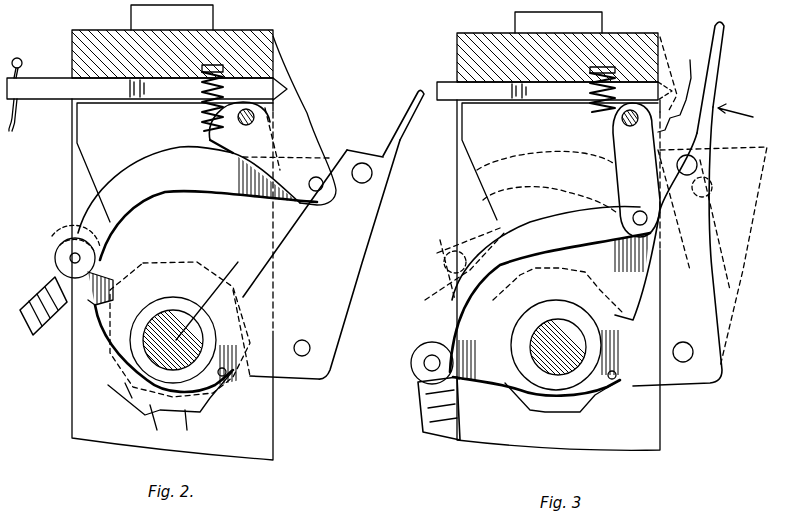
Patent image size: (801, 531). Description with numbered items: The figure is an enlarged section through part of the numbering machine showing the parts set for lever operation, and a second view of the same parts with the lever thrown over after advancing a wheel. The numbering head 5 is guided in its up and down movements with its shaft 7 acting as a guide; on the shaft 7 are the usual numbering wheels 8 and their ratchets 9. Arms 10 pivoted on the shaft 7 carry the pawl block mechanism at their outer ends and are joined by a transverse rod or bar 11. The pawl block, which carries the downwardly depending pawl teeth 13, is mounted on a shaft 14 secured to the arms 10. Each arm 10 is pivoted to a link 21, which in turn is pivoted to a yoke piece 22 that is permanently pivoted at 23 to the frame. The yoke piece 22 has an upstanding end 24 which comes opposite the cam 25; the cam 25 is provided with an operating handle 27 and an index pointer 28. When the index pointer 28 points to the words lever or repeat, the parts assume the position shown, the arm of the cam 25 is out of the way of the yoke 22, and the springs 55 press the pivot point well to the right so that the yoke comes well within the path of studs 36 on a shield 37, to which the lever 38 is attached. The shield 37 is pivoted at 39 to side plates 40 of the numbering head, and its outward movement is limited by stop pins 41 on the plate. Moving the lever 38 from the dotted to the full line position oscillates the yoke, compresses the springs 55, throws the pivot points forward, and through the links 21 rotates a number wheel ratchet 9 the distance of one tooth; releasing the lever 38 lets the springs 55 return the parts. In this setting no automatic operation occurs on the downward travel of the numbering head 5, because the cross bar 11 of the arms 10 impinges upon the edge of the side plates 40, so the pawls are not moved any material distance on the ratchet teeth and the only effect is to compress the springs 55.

In FIG. 2, the numbering head 5 is at (128, 404).
In FIG. 3, the numbering head 5 is at (528, 398).
In FIG. 2, the shaft 7 is at (211, 295).
In FIG. 3, the shaft 7 is at (563, 367).
In FIG. 2, the numbering wheels 8 is at (185, 430).
In FIG. 2, the ratchets 9 is at (155, 428).
In FIG. 2, the arms 10 is at (169, 329).
In FIG. 3, the arms 10 is at (537, 332).
In FIG. 2, the transverse rod or bar 11 is at (86, 223).
In FIG. 2, the pawl teeth 13 is at (67, 327).
In FIG. 3, the pawl teeth 13 is at (433, 433).
In FIG. 2, the shaft 14 is at (70, 258).
In FIG. 3, the shaft 14 is at (424, 364).
In FIG. 2, the link 21 is at (197, 203).
In FIG. 3, the link 21 is at (550, 289).
In FIG. 2, the yoke piece 22 is at (269, 146).
In FIG. 3, the yoke piece 22 is at (636, 170).
In FIG. 2, the pivot 23 is at (245, 126).
In FIG. 3, the pivot 23 is at (630, 128).
In FIG. 2, the upstanding end 24 is at (273, 58).
In FIG. 3, the upstanding end 24 is at (683, 72).
In FIG. 2, the cam 25 is at (47, 99).
In FIG. 3, the cam 25 is at (452, 100).
In FIG. 2, the operating handle 27 is at (20, 58).
In FIG. 2, the index pointer 28 is at (17, 128).
In FIG. 2, the spring 55 is at (203, 110).
In FIG. 3, the spring 55 is at (590, 110).
In FIG. 2, the studs 36 is at (372, 176).
In FIG. 3, the studs 36 is at (694, 164).
In FIG. 2, the shield 37 is at (316, 259).
In FIG. 3, the shield 37 is at (691, 245).
In FIG. 2, the lever 38 is at (405, 110).
In FIG. 3, the lever 38 is at (724, 62).
In FIG. 2, the pivot 39 is at (302, 357).
In FIG. 3, the pivot 39 is at (690, 360).
In FIG. 2, the side plates 40 is at (155, 298).
In FIG. 3, the side plates 40 is at (531, 132).
In FIG. 2, the stop pins 41 is at (230, 377).
In FIG. 3, the stop pins 41 is at (640, 380).